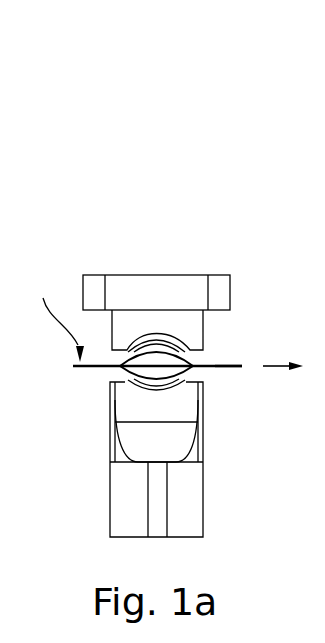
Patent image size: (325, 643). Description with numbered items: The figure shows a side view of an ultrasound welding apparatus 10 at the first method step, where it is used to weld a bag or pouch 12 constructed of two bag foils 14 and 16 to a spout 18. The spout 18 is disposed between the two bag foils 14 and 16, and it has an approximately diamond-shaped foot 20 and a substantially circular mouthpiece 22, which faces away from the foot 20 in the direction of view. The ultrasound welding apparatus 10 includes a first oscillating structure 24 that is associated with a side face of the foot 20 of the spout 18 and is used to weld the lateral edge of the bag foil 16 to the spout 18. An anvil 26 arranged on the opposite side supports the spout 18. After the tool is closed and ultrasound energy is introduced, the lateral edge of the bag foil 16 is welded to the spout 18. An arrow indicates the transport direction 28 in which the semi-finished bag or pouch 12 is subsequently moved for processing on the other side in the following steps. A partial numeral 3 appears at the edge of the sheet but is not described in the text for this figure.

The ultrasound welding apparatus 10 is at (250, 124).
The adjacent figure reference 3 is at (320, 225).
The bag or pouch 12 is at (58, 317).
The bag foil 14 is at (231, 364).
The bag foil 16 is at (222, 369).
The spout 18 is at (140, 382).
The foot 20 is at (178, 378).
The mouthpiece 22 is at (170, 384).
The first oscillating structure 24 is at (155, 510).
The anvil 26 is at (153, 293).
The transport direction 28 is at (279, 362).